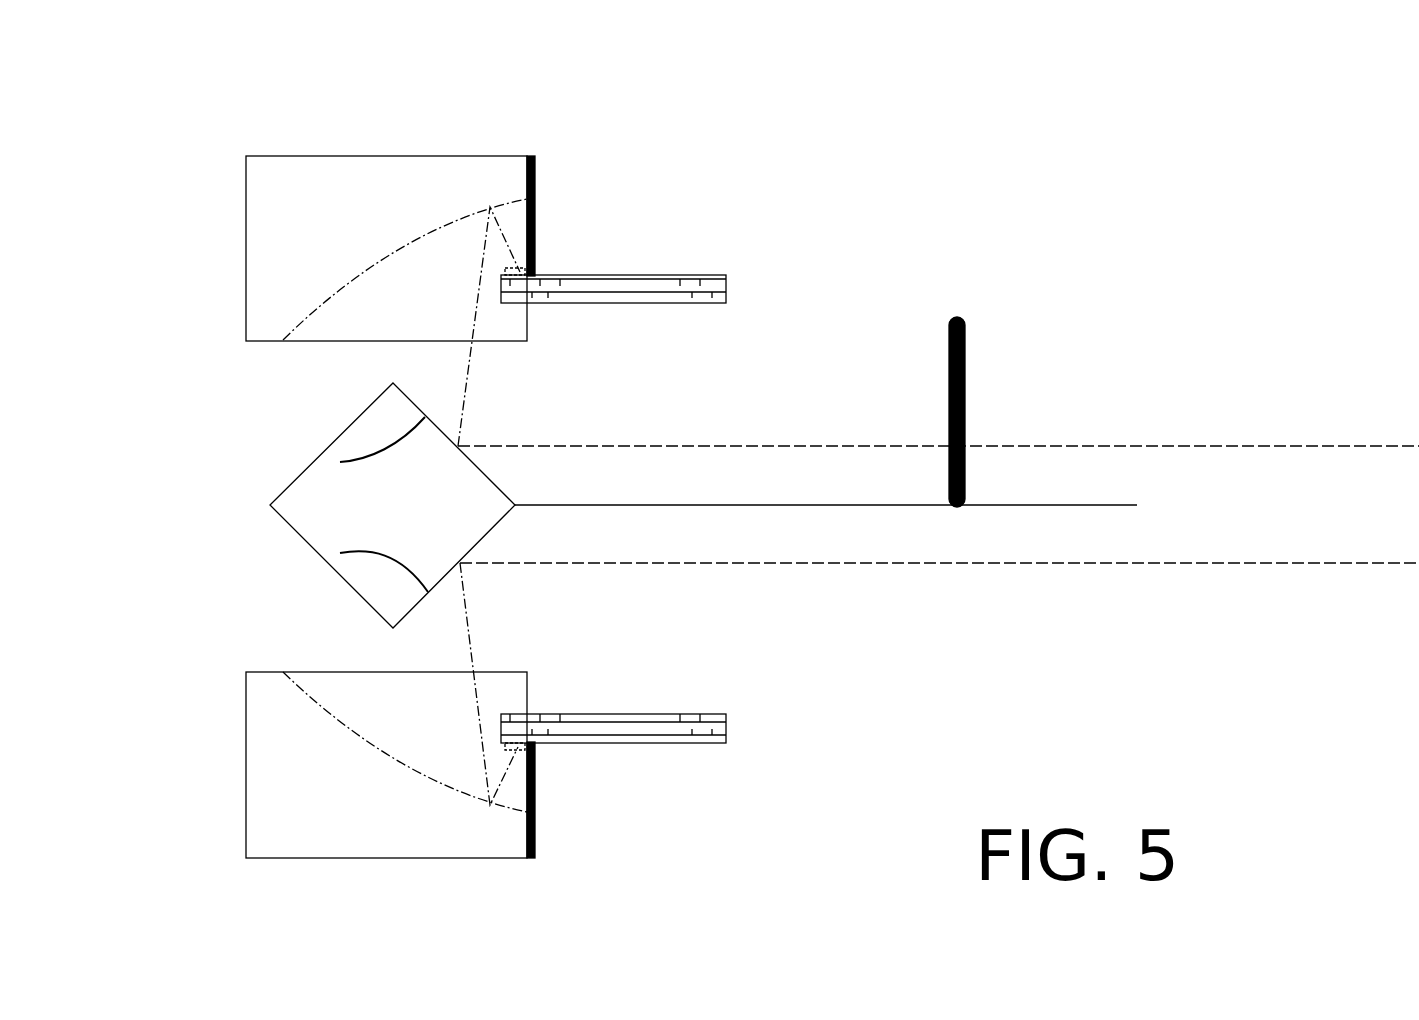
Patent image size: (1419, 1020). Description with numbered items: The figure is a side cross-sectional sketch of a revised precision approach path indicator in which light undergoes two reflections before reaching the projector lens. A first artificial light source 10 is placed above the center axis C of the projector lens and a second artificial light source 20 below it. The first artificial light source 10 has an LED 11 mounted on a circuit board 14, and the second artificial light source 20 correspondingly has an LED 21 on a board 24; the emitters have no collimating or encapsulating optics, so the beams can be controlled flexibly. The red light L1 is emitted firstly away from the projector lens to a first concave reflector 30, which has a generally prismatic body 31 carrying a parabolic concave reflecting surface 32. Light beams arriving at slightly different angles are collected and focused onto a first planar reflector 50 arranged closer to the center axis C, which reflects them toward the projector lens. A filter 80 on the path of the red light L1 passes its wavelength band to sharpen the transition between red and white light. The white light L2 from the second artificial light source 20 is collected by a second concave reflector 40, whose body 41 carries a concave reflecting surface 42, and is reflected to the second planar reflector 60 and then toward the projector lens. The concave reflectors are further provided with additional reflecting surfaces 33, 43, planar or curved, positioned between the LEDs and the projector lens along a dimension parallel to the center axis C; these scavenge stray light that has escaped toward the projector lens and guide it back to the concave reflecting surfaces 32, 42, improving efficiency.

The first artificial light source 10 is at (670, 295).
The LED 11 is at (528, 320).
The circuit board 14 is at (718, 288).
The second artificial light source 20 is at (727, 682).
The LED 21 is at (527, 716).
The board 24 is at (718, 722).
The first concave reflector 30 is at (540, 188).
The body 31 is at (395, 168).
The concave reflecting surface 32 is at (375, 245).
The additional reflecting surface 33 is at (535, 176).
The second concave reflector 40 is at (521, 820).
The body 41 is at (422, 835).
The concave reflecting surface 42 is at (383, 770).
The additional reflecting surface 43 is at (535, 825).
The first planar reflector 50 is at (340, 462).
The second planar reflector 60 is at (340, 553).
The filter 80 is at (957, 318).
The center axis of the projector lens C is at (1128, 503).
The first light beam L1 is at (1329, 446).
The second light beam L2 is at (1329, 563).